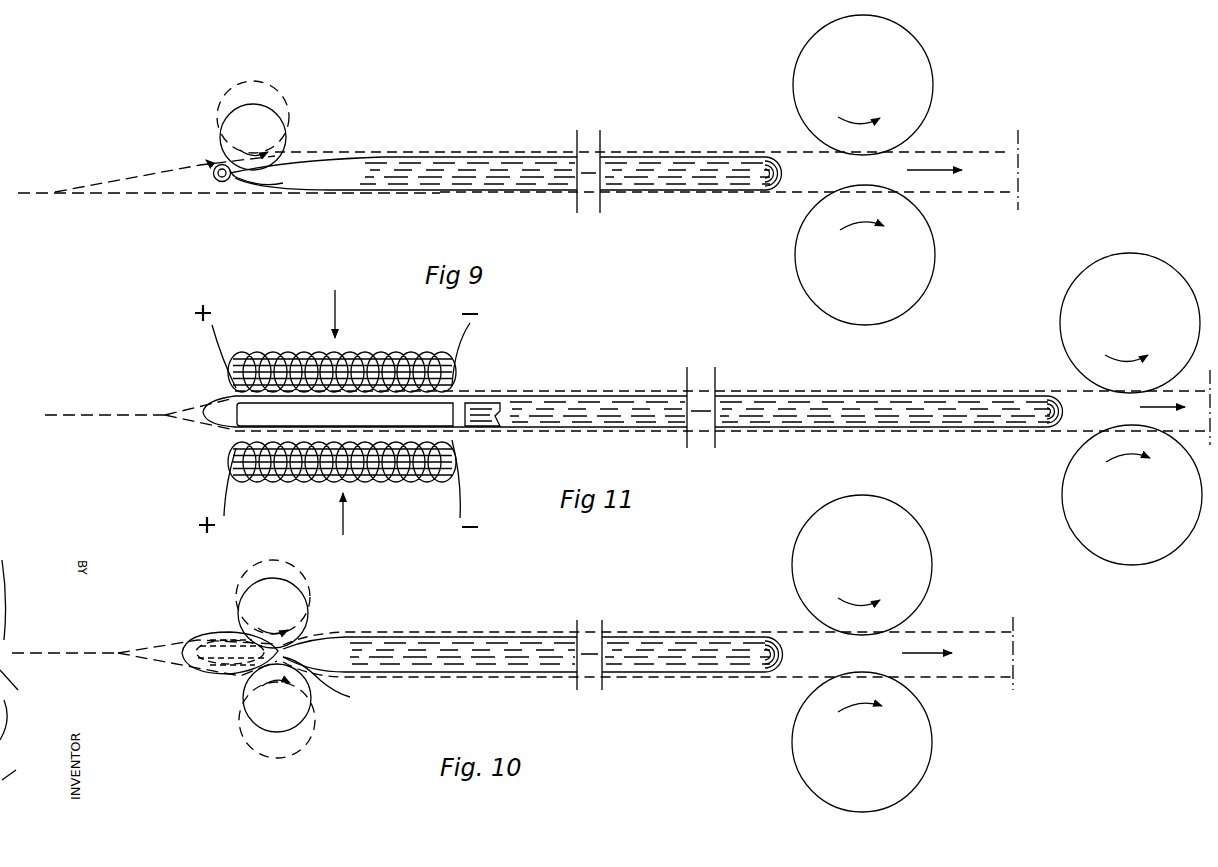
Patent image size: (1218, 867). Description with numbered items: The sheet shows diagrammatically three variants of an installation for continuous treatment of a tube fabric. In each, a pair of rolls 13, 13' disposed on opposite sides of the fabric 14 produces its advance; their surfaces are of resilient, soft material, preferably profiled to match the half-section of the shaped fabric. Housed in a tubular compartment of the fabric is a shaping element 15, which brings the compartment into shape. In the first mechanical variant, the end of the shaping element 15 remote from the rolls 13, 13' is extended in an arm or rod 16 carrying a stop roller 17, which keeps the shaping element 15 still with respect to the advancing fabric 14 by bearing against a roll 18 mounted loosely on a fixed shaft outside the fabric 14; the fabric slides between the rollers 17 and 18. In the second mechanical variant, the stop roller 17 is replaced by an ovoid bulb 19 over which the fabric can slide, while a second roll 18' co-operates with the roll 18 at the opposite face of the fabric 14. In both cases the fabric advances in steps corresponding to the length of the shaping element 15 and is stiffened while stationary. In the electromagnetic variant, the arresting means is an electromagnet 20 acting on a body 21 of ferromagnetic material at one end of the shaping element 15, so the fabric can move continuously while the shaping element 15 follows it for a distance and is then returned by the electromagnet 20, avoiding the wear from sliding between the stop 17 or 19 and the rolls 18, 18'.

In FIG. 9, the roll 13 is at (887, 255).
In FIG. 10, the roll 13 is at (888, 742).
In FIG. 11, the roll 13 is at (1114, 495).
In FIG. 9, the roll 13' is at (892, 85).
In FIG. 10, the roll 13' is at (889, 565).
In FIG. 11, the roll 13' is at (1111, 323).
In FIG. 9, the fabric 14 is at (138, 172).
In FIG. 10, the fabric 14 is at (118, 652).
In FIG. 11, the fabric 14 is at (127, 410).
In FIG. 9, the shaping element 15 is at (530, 172).
In FIG. 10, the shaping element 15 is at (522, 652).
In FIG. 11, the shaping element 15 is at (746, 410).
In FIG. 9, the arm or rod 16 is at (282, 186).
In FIG. 10, the arm or rod 16 is at (331, 688).
In FIG. 9, the stop roller 17 is at (218, 194).
In FIG. 9, the roll 18 is at (279, 115).
In FIG. 10, the roll 18 is at (305, 604).
In FIG. 10, the second roll 18' is at (307, 713).
In FIG. 10, the ovoid bulb 19 is at (216, 640).
In FIG. 11, the electromagnet 20 is at (358, 414).
In FIG. 11, the body of ferromagnetic material 21 is at (446, 418).